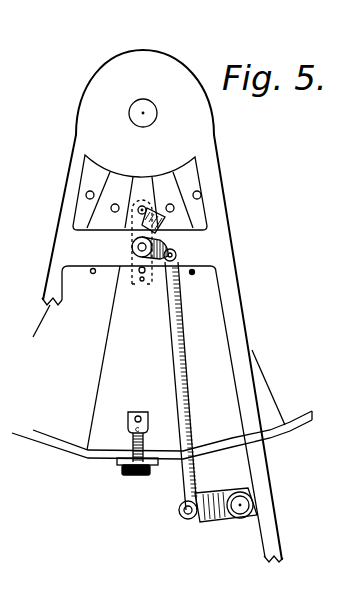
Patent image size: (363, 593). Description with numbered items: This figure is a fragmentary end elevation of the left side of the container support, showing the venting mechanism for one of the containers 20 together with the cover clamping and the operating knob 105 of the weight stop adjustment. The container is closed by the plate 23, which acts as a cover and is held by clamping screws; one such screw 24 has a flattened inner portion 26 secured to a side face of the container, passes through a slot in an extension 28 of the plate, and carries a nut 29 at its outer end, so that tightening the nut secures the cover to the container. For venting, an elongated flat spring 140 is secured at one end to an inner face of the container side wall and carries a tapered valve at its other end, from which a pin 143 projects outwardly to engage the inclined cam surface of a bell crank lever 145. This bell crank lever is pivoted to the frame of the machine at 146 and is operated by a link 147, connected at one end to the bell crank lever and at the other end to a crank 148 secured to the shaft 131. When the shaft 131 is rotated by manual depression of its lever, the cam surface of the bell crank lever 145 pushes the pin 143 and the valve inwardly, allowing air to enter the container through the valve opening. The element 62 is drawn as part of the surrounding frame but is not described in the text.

The container 20 is at (62, 432).
The plate 23 is at (80, 450).
The screw 24 is at (143, 443).
The flattened inner portion 26 is at (137, 416).
The extension 28 is at (153, 466).
The nut 29 is at (127, 474).
The frame arm 62 is at (238, 305).
The operating knob 105 is at (26, 345).
The shaft 131 is at (238, 497).
The elongated flat spring 140 is at (143, 286).
The pin 143 is at (143, 206).
The bell crank lever 145 is at (177, 246).
The pivot 146 is at (132, 247).
The link 147 is at (181, 357).
The crank 148 is at (215, 521).